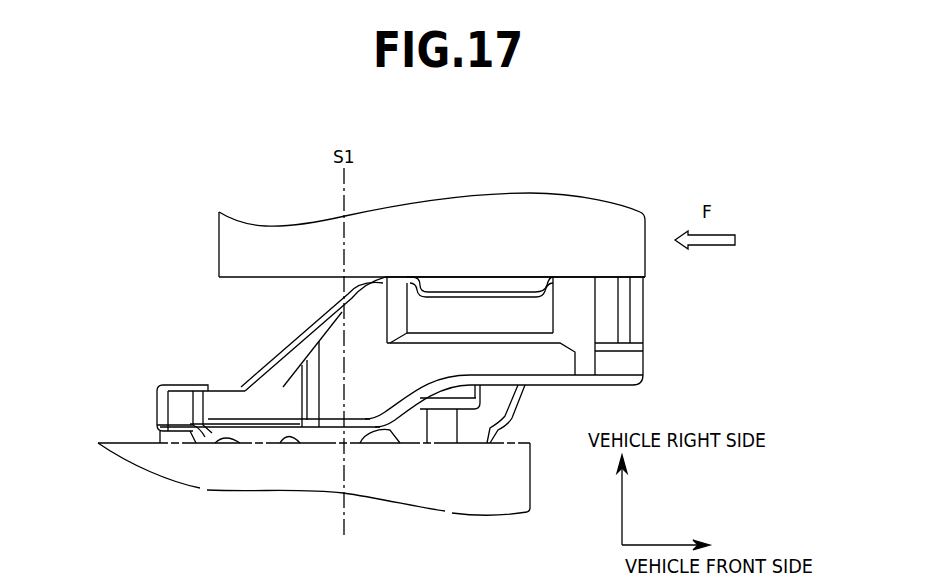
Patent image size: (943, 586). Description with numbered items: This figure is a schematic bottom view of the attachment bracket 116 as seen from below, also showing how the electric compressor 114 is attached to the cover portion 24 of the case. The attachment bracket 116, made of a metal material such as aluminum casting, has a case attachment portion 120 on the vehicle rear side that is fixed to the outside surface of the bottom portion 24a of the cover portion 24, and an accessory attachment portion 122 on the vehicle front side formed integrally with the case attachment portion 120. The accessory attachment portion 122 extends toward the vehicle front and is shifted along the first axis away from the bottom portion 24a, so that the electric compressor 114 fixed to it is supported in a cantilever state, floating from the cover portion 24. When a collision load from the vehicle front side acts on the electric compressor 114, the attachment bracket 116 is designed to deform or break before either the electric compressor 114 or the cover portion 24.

The electric compressor 114 is at (535, 205).
The attachment bracket 116 is at (272, 323).
The accessory attachment portion 122 is at (473, 305).
The case attachment portion 120 is at (238, 405).
The bottom portion 24a is at (128, 440).
The cover portion 24 is at (445, 511).